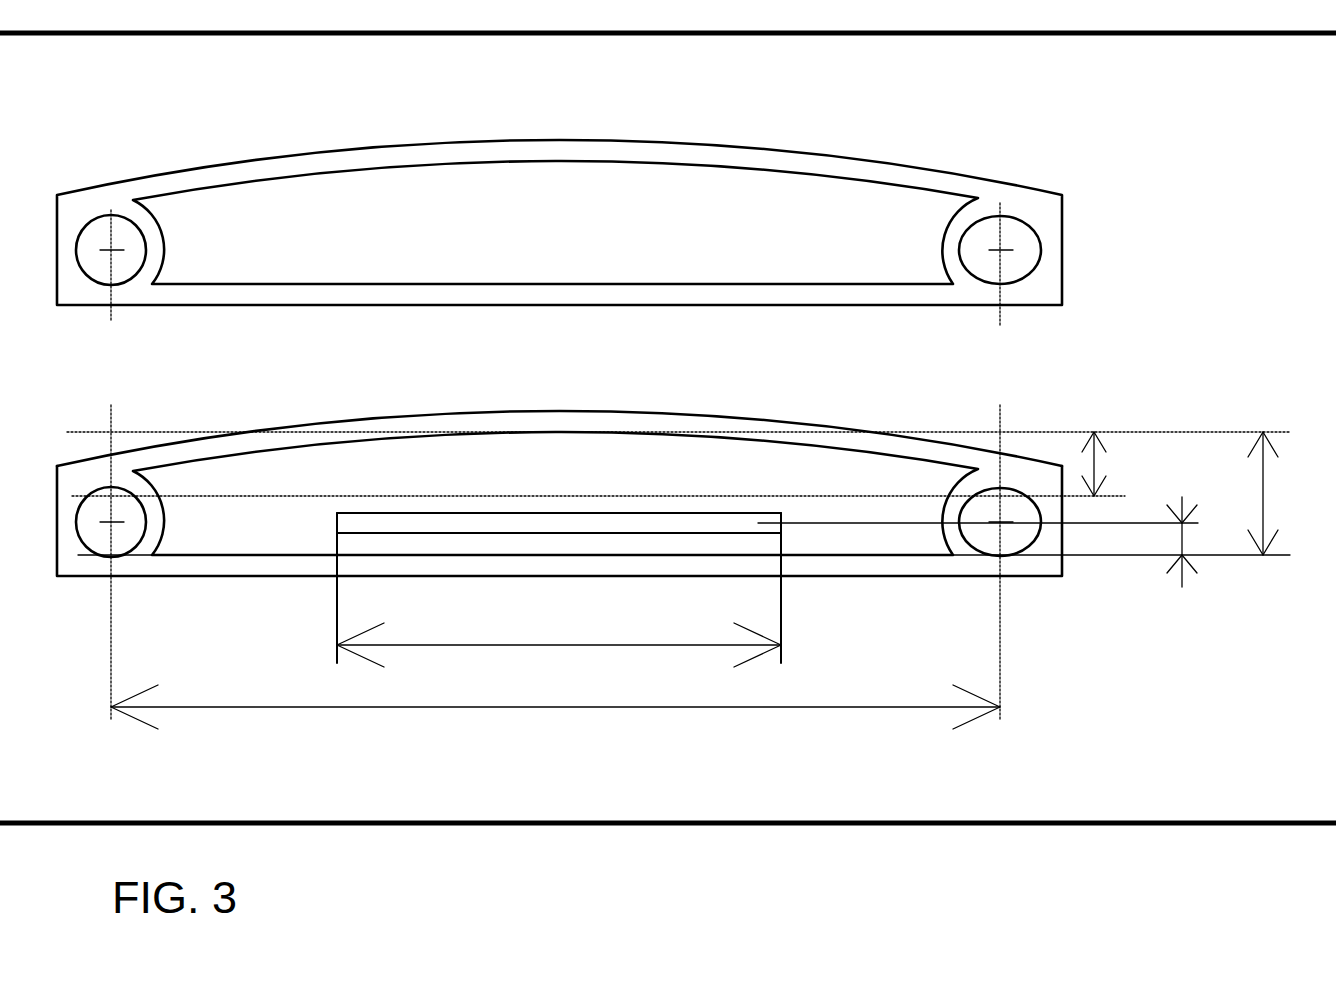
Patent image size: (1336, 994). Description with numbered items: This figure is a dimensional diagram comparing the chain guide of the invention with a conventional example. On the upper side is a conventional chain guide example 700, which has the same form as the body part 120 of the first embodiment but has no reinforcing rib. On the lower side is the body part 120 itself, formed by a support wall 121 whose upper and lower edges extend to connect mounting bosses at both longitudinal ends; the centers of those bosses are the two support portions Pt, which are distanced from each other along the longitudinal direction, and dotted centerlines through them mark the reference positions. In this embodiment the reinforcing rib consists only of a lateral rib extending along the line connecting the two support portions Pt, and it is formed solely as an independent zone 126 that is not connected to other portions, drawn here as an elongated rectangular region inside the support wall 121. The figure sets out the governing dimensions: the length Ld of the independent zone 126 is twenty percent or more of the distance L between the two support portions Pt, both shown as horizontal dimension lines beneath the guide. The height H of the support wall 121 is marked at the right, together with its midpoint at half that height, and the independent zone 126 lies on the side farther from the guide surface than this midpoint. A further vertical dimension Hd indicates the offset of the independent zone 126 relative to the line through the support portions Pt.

The conventional chain guide example 700 is at (224, 157).
The body part 120 is at (673, 536).
The support wall 121 is at (527, 472).
The independent zone 126 is at (430, 527).
The support portion Pt is at (110, 523).
The distance between the two support portions L is at (555, 717).
The length of the independent zone Ld is at (559, 656).
The height of the support wall H is at (1273, 493).
The offset height of plate portion Hd is at (1185, 564).